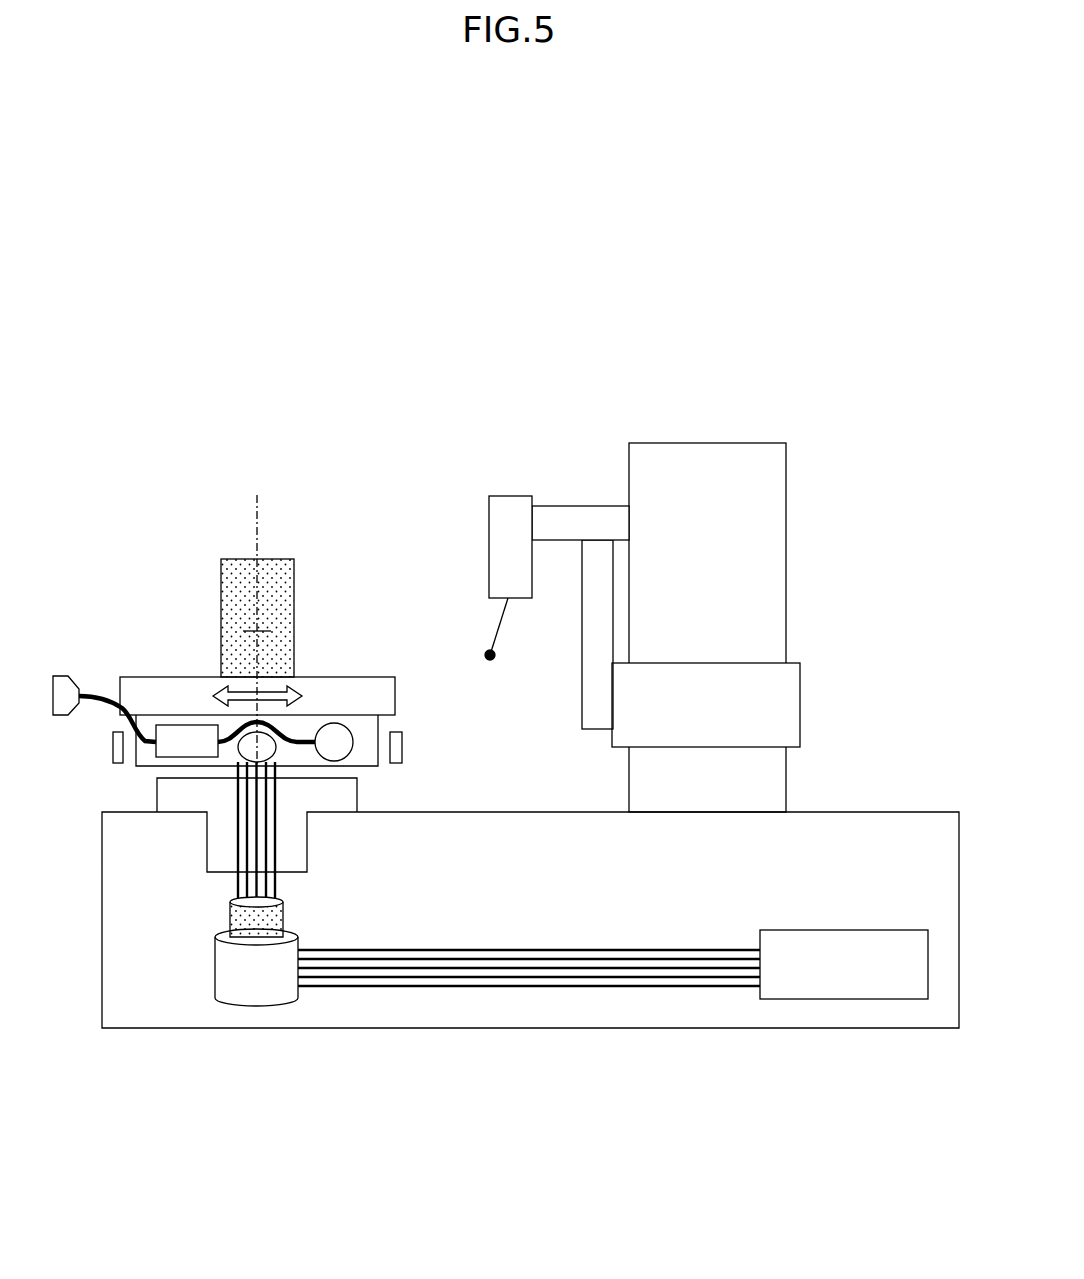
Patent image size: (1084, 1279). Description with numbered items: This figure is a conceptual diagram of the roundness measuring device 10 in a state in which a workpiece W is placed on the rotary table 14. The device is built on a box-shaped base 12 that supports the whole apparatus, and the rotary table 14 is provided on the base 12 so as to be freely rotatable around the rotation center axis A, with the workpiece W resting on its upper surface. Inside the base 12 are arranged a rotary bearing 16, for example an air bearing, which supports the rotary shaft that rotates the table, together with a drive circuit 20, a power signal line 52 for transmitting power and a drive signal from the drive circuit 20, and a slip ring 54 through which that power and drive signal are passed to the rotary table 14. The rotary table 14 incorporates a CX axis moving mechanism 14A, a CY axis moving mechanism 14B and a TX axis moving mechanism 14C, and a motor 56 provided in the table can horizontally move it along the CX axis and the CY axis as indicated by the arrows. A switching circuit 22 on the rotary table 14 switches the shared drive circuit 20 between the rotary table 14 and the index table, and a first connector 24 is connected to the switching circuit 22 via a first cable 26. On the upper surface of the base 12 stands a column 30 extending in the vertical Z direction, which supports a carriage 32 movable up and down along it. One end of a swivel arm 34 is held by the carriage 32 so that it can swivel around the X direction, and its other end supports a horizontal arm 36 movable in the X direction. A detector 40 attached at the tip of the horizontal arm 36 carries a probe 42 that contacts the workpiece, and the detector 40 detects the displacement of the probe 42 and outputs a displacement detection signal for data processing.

The roundness measuring device 10 is at (533, 319).
The base 12 is at (542, 1029).
The rotary table 14 is at (410, 702).
The CX axis moving mechanism 14A is at (402, 747).
The CY axis moving mechanism 14B is at (276, 752).
The TX axis moving mechanism 14C is at (113, 747).
The rotary bearing 16 is at (350, 793).
The drive circuit 20 is at (847, 930).
The switching circuit 22 is at (187, 750).
The first connector 24 is at (62, 680).
The first cable 26 is at (102, 692).
The column 30 is at (706, 448).
The carriage 32 is at (800, 704).
The swivel arm 34 is at (583, 693).
The horizontal arm 36 is at (576, 508).
The detector 40 is at (477, 542).
The probe 42 is at (502, 628).
The power signal line 52 is at (528, 947).
The slip ring 54 is at (220, 965).
The motor 56 is at (340, 726).